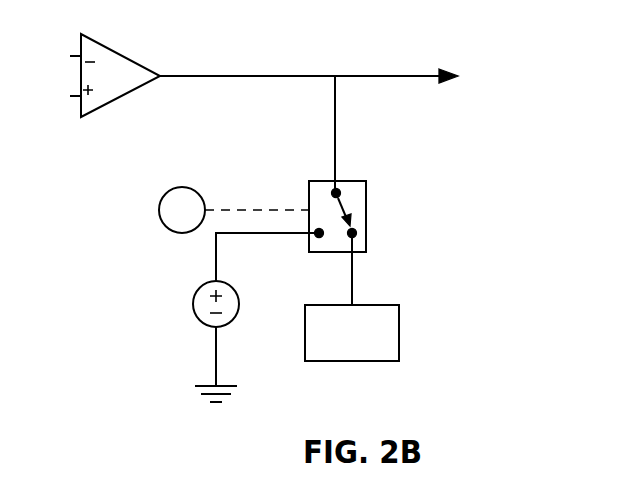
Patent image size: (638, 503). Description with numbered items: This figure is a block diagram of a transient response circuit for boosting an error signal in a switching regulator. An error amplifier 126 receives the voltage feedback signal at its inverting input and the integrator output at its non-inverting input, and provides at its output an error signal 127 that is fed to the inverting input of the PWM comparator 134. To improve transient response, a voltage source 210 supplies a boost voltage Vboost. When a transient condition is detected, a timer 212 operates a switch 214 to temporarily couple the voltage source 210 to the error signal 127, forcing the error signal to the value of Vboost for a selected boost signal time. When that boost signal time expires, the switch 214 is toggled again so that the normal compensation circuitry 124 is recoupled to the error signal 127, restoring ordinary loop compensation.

The error amplifier 126 is at (122, 97).
The error signal 127 is at (177, 73).
The PWM comparator 134 is at (530, 73).
The timer 212 is at (195, 191).
The switch 214 is at (375, 192).
The voltage source 210 is at (237, 290).
The compensation circuitry 124 is at (405, 334).